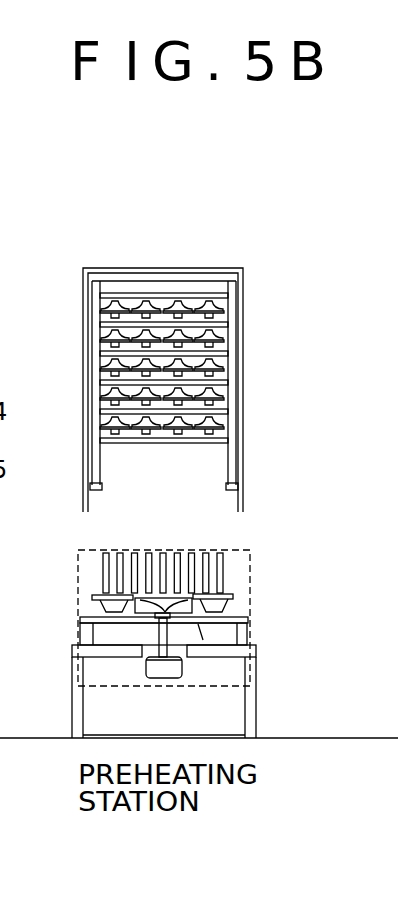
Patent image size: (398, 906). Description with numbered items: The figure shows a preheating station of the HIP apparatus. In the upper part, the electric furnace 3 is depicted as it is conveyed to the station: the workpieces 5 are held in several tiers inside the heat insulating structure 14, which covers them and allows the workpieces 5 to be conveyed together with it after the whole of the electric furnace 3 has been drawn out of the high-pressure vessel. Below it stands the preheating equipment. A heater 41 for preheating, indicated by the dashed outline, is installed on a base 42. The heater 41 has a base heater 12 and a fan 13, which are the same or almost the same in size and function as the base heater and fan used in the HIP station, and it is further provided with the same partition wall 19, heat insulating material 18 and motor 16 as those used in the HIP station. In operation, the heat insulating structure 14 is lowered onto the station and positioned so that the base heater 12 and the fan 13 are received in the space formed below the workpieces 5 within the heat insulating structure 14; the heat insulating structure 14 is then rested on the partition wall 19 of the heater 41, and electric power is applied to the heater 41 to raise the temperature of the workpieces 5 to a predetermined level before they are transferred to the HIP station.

The electric furnace 3 is at (198, 357).
The heat insulating structure 14 is at (243, 300).
The workpieces 5 is at (213, 363).
The heater for preheating 41 is at (258, 558).
The base heater 12 is at (225, 575).
The fan 13 is at (233, 605).
The heat insulating material 18 is at (110, 635).
The partition wall 19 is at (200, 624).
The base 42 is at (257, 706).
The motor 16 is at (165, 679).